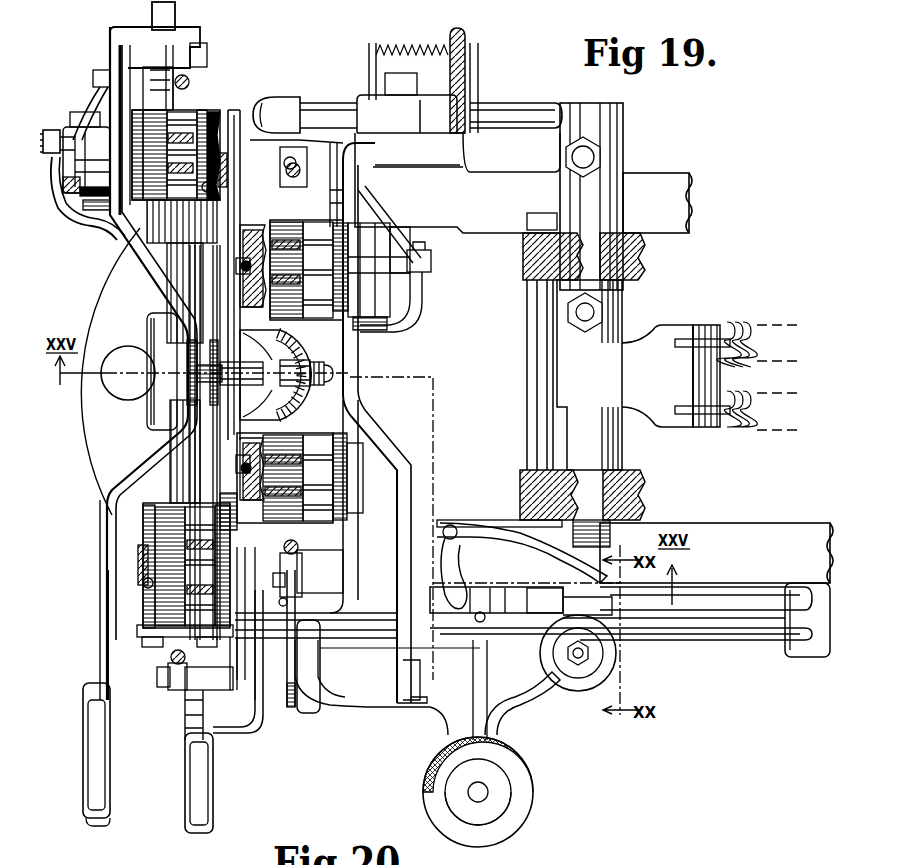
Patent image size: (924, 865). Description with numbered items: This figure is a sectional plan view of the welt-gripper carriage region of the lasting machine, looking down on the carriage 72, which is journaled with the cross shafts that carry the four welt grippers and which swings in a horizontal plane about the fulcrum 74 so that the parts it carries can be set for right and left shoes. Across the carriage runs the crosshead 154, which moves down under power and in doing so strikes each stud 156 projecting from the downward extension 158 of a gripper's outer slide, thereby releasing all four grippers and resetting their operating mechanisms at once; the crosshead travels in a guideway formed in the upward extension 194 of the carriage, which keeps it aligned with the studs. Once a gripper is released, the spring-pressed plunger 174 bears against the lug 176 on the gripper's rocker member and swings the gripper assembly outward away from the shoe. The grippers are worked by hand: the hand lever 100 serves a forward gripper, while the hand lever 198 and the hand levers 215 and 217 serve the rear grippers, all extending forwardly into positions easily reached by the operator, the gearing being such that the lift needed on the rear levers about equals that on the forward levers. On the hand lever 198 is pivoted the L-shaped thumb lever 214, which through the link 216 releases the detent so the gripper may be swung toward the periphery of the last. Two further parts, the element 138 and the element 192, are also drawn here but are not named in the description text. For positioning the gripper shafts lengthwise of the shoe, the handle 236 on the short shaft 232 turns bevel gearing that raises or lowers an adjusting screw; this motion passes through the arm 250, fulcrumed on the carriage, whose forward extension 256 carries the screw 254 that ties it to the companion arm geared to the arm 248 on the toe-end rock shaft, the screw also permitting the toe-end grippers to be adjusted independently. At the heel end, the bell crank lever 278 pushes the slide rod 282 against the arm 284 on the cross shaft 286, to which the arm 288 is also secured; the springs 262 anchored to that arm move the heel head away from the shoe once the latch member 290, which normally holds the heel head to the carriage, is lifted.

The carriage 72 is at (82, 415).
The fulcrum 74 is at (128, 400).
The hand lever 100 is at (245, 722).
The pad 138 is at (205, 788).
The crosshead 154 is at (236, 110).
The stud 156 is at (272, 170).
The downward extension of the outer slide 158 is at (226, 170).
The spring-pressed plunger 174 is at (210, 189).
The lug 176 is at (260, 303).
The pinion disc 192 is at (326, 364).
The upward extension of the carriage 194 is at (300, 392).
The hand lever 198 is at (102, 818).
The L-shaped thumb lever 214 is at (100, 768).
The hand lever 215 is at (288, 690).
The link 216 is at (107, 686).
The hand lever 217 is at (385, 697).
The short shaft 232 is at (478, 800).
The handle 236 is at (522, 812).
The arm 248 is at (730, 640).
The arm 250 is at (740, 600).
The screw 254 is at (616, 657).
The forward extension of the arm 256 is at (612, 615).
The springs 262 is at (737, 325).
The bell crank lever 278 is at (270, 107).
The slide rod 282 is at (498, 110).
The arm 284 is at (560, 110).
The cross shaft 286 is at (610, 490).
The arm 288 is at (643, 375).
The latch member 290 is at (508, 525).